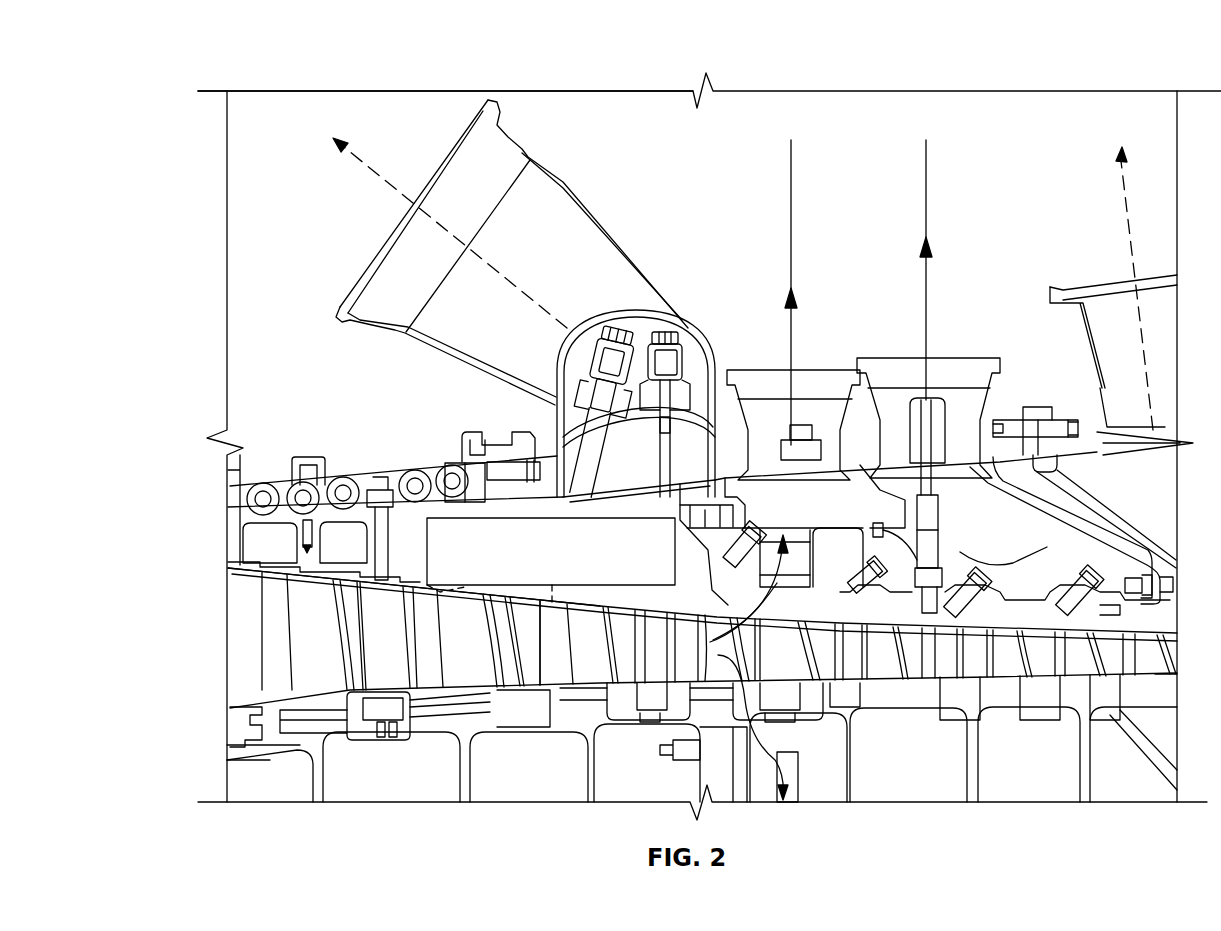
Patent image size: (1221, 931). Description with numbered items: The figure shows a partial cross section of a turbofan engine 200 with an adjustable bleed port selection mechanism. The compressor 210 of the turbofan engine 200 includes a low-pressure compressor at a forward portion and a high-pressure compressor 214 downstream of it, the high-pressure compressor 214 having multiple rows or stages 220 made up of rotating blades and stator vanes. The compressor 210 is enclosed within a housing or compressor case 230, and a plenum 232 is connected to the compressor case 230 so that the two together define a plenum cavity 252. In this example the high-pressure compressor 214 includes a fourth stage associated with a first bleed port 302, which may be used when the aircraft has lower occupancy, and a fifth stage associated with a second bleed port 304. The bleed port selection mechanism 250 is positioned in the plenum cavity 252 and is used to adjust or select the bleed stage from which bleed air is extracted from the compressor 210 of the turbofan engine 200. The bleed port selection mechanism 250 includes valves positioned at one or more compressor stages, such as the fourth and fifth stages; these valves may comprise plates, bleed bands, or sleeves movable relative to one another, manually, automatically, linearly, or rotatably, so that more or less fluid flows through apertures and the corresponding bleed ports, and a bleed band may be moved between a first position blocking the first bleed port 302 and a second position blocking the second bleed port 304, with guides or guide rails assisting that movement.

The turbofan engine 200 is at (236, 72).
The compressor 210 is at (742, 288).
The high-pressure compressor 214 is at (443, 513).
The rows or stages 220 is at (688, 597).
The compressor case 230 is at (387, 788).
The plenum 232 is at (508, 518).
The bleed port selection mechanism 250 is at (485, 472).
The plenum cavity 252 is at (407, 568).
The first bleed port 302 is at (423, 588).
The second bleed port 304 is at (558, 640).